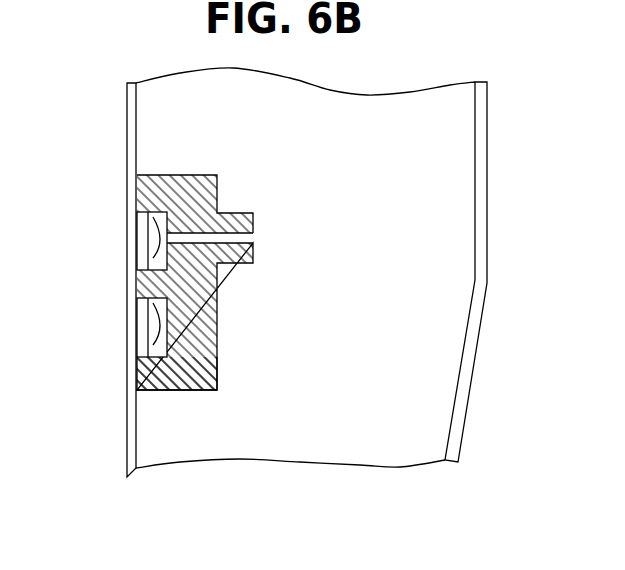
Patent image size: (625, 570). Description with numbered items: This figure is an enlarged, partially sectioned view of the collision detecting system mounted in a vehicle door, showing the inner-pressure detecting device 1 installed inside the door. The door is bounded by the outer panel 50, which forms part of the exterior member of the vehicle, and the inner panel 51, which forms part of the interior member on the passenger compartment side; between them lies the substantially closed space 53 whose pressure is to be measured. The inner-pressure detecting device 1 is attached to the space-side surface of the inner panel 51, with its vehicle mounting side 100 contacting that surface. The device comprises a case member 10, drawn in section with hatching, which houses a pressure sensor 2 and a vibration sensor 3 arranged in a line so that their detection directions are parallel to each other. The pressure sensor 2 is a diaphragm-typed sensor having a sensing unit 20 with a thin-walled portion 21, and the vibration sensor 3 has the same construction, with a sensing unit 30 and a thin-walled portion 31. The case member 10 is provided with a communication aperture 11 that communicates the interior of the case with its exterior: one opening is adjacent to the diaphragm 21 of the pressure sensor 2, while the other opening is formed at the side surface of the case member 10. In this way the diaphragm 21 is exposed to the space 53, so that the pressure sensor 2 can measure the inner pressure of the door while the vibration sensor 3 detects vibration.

The inner-pressure detecting device 1 is at (174, 283).
The case member 10 is at (192, 188).
The communication aperture 11 is at (235, 238).
The pressure sensor 2 is at (102, 231).
The sensing unit 20 is at (162, 240).
The thin-walled portion 21 is at (155, 222).
The vibration sensor 3 is at (102, 319).
The sensing unit 30 is at (162, 328).
The thin-walled portion 31 is at (155, 307).
The vehicle mounting side 100 is at (150, 372).
The outer panel 50 is at (457, 433).
The inner panel 51 is at (132, 428).
The space 53 is at (303, 443).